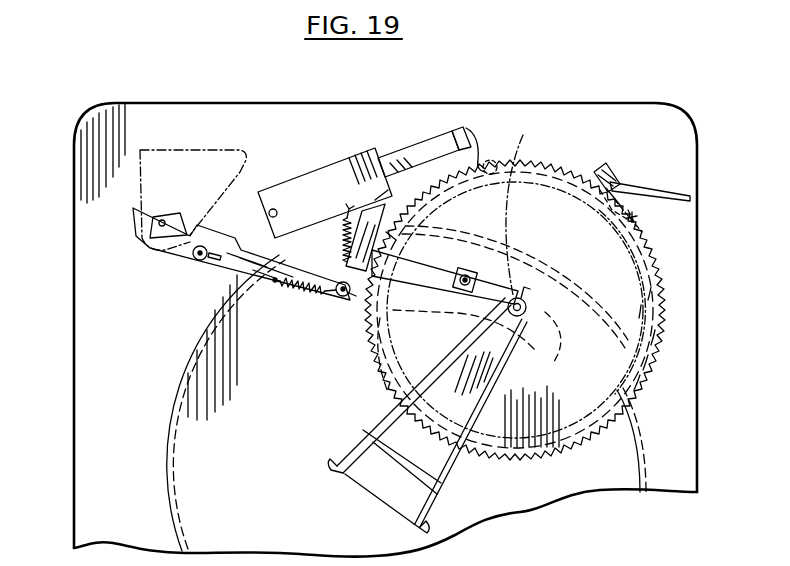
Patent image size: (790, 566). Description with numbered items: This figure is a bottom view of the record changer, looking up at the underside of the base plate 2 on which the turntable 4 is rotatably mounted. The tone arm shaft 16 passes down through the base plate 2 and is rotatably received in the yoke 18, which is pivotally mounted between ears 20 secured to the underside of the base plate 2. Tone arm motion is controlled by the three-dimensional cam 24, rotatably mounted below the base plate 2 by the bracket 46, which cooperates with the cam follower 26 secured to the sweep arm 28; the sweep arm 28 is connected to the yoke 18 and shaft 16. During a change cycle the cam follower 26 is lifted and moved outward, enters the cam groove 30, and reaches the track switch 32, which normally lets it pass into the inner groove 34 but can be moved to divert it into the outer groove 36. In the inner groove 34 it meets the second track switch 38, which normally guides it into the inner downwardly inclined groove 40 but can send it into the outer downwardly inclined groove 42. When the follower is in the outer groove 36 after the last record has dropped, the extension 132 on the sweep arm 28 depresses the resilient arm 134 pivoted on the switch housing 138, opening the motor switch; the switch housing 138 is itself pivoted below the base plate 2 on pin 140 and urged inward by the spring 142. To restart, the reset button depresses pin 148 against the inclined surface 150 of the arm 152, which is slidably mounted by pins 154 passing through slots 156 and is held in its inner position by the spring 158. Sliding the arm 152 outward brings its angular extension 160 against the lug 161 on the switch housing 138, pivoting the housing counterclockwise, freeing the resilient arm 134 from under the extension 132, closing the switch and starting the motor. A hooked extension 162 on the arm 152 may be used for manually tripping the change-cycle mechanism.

The base plate 2 is at (668, 108).
The turntable 4 is at (176, 494).
The shaft 16 is at (640, 186).
The yoke 18 is at (612, 182).
The ears 20 is at (604, 170).
The three-dimensional cam 24 is at (697, 250).
The cam follower 26 is at (492, 160).
The sweep arm 28 is at (532, 162).
The cam groove 30 is at (640, 217).
The track switch 32 is at (697, 271).
The inner groove 34 is at (697, 294).
The outer groove 36 is at (697, 315).
The second track switch 38 is at (697, 338).
The inner downwardly inclined groove 40 is at (697, 361).
The outer downwardly inclined groove 42 is at (697, 385).
The bracket 46 is at (463, 470).
The extension 132 is at (466, 142).
The resilient arm 134 is at (425, 150).
The switch housing 138 is at (327, 167).
The pin 140 is at (273, 209).
The spring 142 is at (340, 255).
The pin 148 is at (175, 150).
The inclined surface 150 is at (183, 216).
The arm 152 is at (255, 281).
The pins 154 is at (198, 259).
The slots 156 is at (213, 252).
The spring 158 is at (307, 300).
The angular extension 160 is at (386, 238).
The lug 161 is at (385, 210).
The hooked extension 162 is at (548, 332).